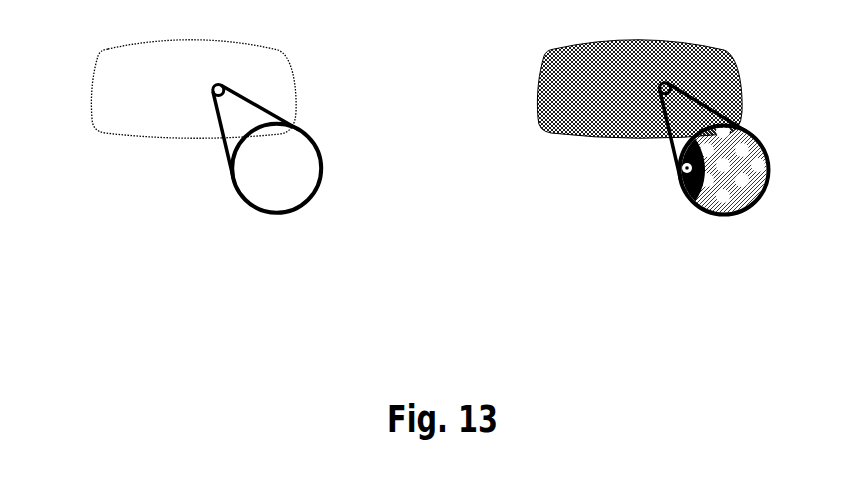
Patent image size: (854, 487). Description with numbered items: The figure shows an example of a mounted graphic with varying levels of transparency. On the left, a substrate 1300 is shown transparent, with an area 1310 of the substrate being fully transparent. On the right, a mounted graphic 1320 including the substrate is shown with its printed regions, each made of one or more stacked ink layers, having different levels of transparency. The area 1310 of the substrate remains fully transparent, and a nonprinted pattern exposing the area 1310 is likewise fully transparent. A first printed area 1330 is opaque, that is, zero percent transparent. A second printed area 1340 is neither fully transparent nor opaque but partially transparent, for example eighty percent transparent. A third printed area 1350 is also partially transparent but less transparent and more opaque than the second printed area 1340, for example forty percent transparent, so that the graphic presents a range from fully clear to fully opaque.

The substrate 1300 is at (138, 47).
The area of the substrate 1310 is at (243, 163).
The mounted graphic 1320 is at (546, 62).
The first printed area 1330 is at (683, 180).
The second printed area 1340 is at (710, 203).
The third printed area 1350 is at (742, 202).